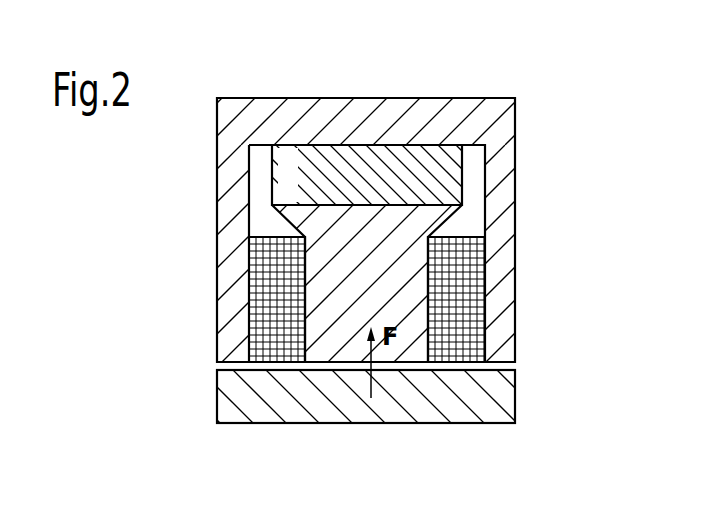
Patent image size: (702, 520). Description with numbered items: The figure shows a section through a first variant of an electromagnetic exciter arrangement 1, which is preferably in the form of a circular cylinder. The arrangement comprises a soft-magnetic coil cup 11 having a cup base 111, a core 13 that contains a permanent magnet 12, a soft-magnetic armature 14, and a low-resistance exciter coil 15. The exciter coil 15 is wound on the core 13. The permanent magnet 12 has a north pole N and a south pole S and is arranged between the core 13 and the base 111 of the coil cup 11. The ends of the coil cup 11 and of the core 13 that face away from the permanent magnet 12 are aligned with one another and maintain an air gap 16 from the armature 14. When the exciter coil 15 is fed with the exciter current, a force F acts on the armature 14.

The electromagnetic exciter arrangement 1 is at (381, 64).
The cup base 111 is at (253, 112).
The soft-magnetic coil cup 11 is at (217, 240).
The permanent magnet 12 is at (453, 163).
The core 13 is at (397, 217).
The soft-magnetic armature 14 is at (422, 406).
The exciter coil 15 is at (470, 300).
The air gap 16 is at (328, 366).